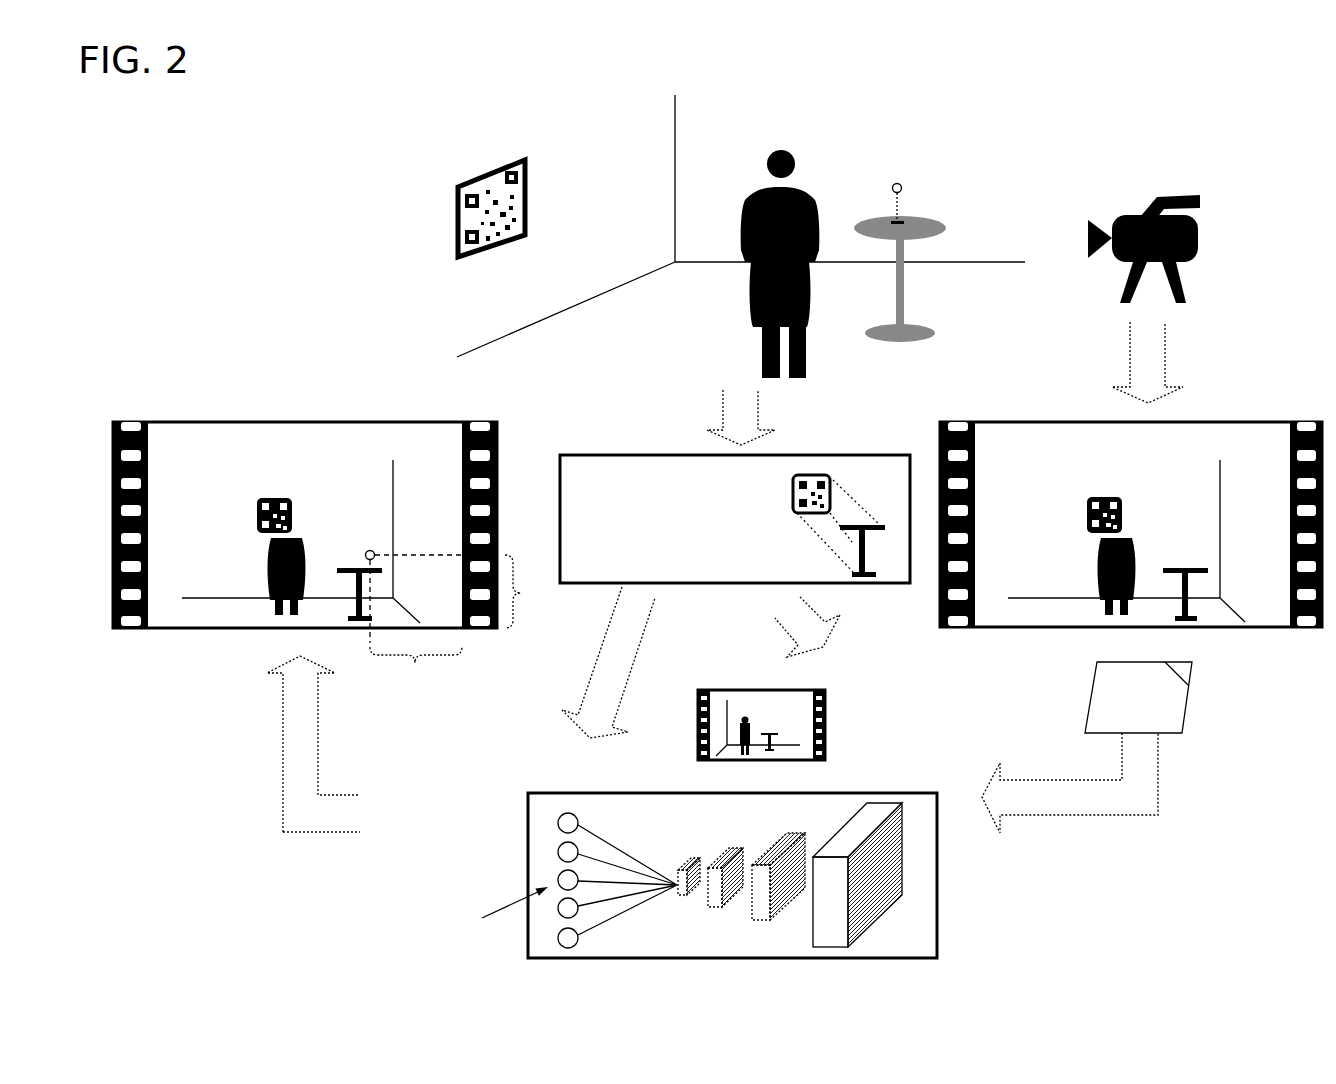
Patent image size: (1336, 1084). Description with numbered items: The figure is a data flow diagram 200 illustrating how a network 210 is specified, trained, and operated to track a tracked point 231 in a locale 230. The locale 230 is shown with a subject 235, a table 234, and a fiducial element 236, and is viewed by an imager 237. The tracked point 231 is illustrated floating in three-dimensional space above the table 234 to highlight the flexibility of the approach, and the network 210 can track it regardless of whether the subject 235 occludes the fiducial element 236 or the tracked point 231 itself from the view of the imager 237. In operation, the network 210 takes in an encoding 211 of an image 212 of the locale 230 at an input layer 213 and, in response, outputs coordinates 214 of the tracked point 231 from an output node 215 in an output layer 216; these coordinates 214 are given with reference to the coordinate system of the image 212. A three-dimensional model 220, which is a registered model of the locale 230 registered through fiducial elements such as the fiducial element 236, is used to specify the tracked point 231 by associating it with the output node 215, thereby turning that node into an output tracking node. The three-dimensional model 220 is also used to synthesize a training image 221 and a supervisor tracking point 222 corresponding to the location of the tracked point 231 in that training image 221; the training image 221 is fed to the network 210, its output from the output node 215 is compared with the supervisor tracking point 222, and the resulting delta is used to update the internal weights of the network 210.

The data flow diagram 200 is at (164, 174).
The network 210 is at (746, 842).
The encoding 211 is at (1138, 697).
The image 212 is at (717, 558).
The input layer 213 is at (880, 870).
The coordinates 214 is at (445, 860).
The output node 215 is at (568, 812).
The output layer 216 is at (490, 920).
The three-dimensional model 220 is at (735, 519).
The training image 221 is at (785, 690).
The supervisor tracking point 222 is at (921, 695).
The locale 230 is at (741, 226).
The tracked point 231 is at (897, 183).
The table 234 is at (938, 225).
The subject 235 is at (768, 180).
The fiducial element 236 is at (458, 212).
The imager 237 is at (1198, 247).